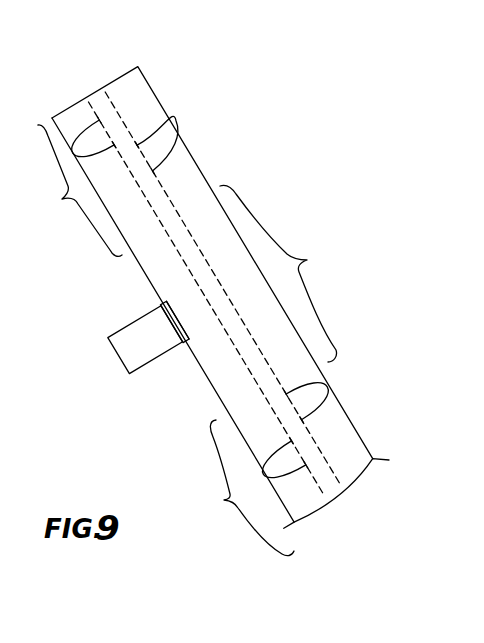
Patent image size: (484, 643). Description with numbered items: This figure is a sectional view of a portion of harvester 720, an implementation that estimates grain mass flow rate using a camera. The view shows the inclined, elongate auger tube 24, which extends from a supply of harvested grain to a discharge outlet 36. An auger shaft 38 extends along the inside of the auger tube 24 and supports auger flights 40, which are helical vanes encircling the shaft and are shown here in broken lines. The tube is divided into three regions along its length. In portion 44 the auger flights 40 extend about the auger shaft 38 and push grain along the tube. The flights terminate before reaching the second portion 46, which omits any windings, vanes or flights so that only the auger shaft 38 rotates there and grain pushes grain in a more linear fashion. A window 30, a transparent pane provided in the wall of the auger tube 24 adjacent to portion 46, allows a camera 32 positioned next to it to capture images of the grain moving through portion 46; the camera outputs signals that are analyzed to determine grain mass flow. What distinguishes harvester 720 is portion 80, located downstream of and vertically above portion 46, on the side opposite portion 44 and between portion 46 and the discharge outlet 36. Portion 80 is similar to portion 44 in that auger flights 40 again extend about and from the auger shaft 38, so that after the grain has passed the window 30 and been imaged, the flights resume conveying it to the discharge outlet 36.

The harvester 720 is at (302, 136).
The discharge outlet 36 is at (118, 78).
The auger shaft 38 is at (120, 117).
The auger flights 40 is at (168, 118).
The portion of auger tube 80 is at (76, 190).
The second portion of auger tube 46 is at (278, 273).
The portion of auger tube 44 is at (247, 488).
The window 30 is at (160, 306).
The camera 32 is at (116, 358).
The auger tube 24 is at (188, 357).